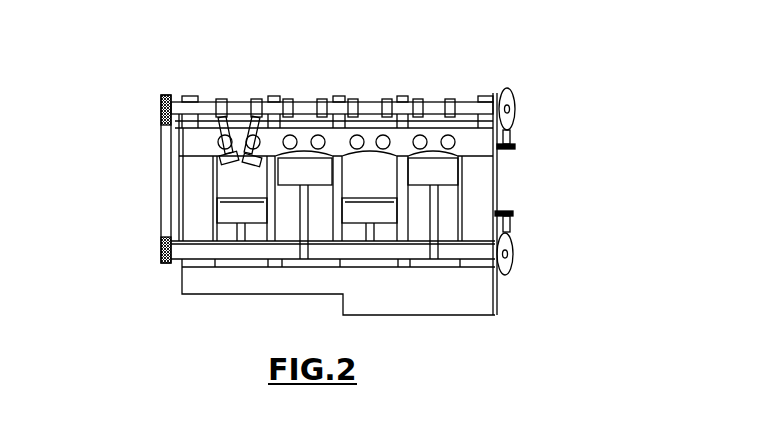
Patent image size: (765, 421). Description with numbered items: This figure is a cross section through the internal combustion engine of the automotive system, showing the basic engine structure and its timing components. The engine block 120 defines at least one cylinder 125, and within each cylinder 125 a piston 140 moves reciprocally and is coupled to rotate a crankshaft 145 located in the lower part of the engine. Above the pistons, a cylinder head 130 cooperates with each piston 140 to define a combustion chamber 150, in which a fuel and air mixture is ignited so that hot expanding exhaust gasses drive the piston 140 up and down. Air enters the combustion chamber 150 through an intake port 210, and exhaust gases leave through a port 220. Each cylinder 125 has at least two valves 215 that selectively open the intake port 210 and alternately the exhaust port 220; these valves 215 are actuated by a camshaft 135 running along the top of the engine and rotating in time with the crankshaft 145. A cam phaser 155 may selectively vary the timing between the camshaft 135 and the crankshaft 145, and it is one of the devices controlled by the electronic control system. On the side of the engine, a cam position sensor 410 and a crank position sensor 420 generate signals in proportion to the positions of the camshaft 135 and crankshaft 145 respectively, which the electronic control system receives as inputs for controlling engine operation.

The engine block 120 is at (182, 199).
The cylinder 125 is at (343, 186).
The cylinder head 130 is at (182, 152).
The camshaft 135 is at (237, 103).
The piston 140 is at (373, 208).
The crankshaft 145 is at (205, 256).
The combustion chamber 150 is at (435, 158).
The cam phaser 155 is at (161, 108).
The intake port 210 is at (360, 135).
The valves 215 is at (230, 150).
The exhaust port 220 is at (313, 136).
The cam position sensor 410 is at (513, 147).
The crank position sensor 420 is at (513, 217).